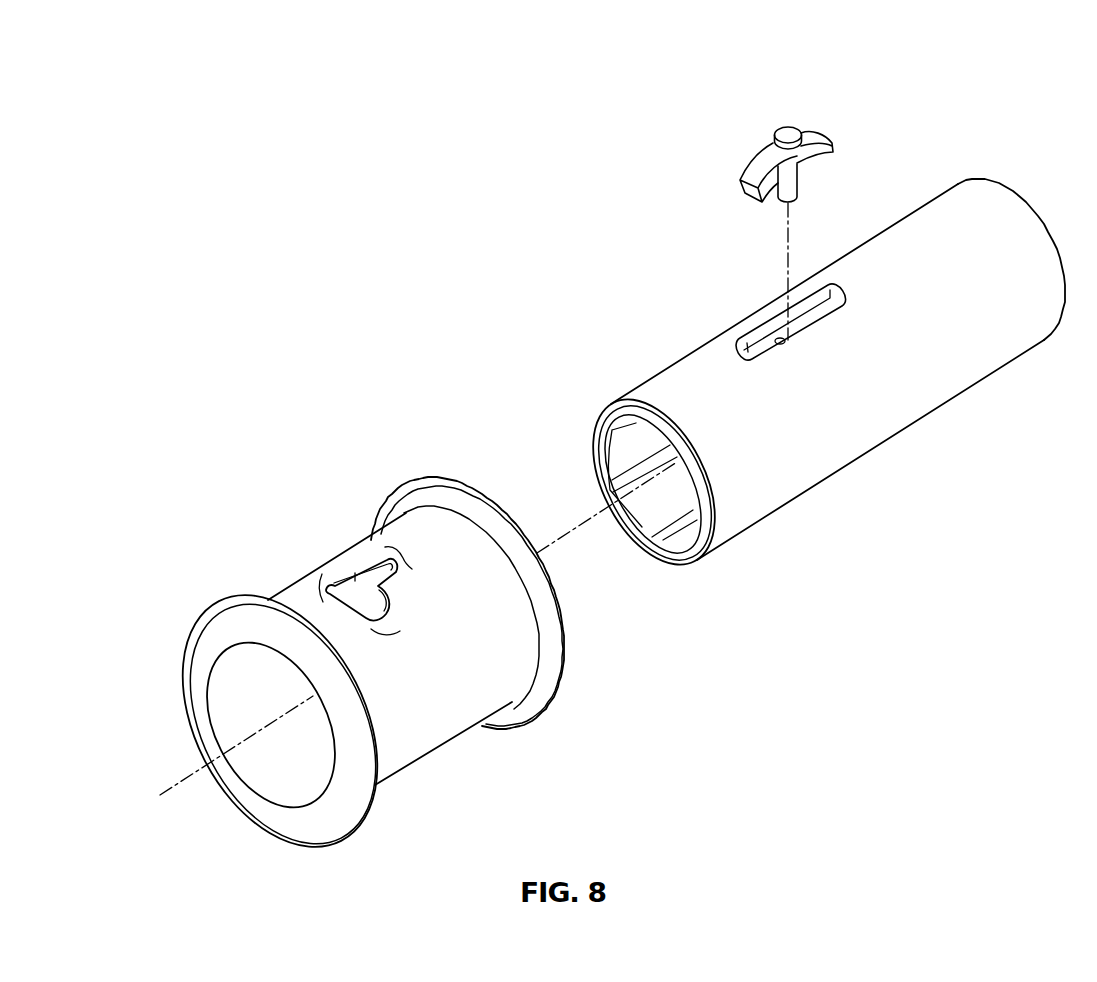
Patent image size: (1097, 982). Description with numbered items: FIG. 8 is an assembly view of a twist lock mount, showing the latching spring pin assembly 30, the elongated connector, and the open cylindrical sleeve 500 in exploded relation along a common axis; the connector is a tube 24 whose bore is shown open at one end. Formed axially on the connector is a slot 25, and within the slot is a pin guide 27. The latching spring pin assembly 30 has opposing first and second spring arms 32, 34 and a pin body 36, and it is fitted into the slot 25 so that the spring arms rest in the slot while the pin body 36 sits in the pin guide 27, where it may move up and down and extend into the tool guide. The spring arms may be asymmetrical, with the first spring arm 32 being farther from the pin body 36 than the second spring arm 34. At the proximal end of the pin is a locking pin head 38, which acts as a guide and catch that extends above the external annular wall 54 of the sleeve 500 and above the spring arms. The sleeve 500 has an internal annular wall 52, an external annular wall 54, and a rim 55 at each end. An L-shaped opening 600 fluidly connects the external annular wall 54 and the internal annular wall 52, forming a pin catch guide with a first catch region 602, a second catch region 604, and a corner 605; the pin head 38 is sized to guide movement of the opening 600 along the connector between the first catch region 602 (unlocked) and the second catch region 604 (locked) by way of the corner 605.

The tubular housing 24 is at (678, 509).
The slot 25 is at (848, 282).
The pin guide 27 is at (779, 337).
The latching spring pin assembly 30 is at (774, 108).
The first spring arm 32 is at (748, 181).
The second spring arm 34 is at (822, 131).
The pin body 36 is at (798, 180).
The locking pin head 38 is at (793, 131).
The open cylindrical sleeve 500 is at (418, 796).
The internal annular wall 52 is at (272, 719).
The external annular wall 54 is at (520, 652).
The rim 55 is at (283, 818).
The "L" shaped opening 600 is at (355, 550).
The first catch region 602 is at (412, 562).
The second catch region 604 is at (396, 636).
The corner 605 is at (322, 578).